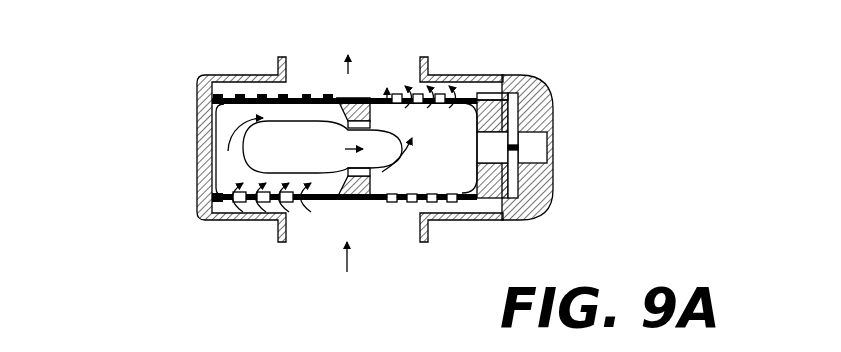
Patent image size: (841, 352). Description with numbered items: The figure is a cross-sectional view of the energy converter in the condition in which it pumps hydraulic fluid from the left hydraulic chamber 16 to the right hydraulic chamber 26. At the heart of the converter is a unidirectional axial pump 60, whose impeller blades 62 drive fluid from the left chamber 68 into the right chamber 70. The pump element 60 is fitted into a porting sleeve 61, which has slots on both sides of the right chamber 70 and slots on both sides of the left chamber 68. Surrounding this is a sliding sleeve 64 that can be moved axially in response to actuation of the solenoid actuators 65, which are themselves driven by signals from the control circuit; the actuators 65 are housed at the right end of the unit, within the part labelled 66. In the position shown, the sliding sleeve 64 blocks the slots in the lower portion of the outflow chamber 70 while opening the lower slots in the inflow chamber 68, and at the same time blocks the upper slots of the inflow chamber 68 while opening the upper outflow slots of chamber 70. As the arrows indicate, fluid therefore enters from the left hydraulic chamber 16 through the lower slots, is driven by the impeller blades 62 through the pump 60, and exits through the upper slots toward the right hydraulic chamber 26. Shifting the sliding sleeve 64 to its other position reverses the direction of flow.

The impeller blades 62 is at (283, 72).
The right hydraulic chamber 26 is at (360, 58).
The solenoid actuators 65 is at (491, 147).
The end cap housing 66 is at (555, 117).
The left chamber 68 is at (236, 175).
The unidirectional axial pump 60 is at (301, 156).
The right chamber 70 is at (449, 158).
The sliding sleeve 64 is at (323, 205).
The porting sleeve 61 is at (366, 204).
The left hydraulic chamber 16 is at (351, 279).